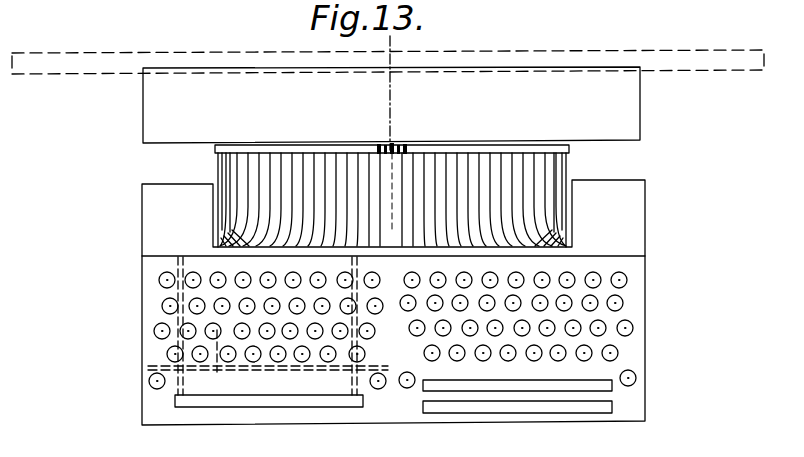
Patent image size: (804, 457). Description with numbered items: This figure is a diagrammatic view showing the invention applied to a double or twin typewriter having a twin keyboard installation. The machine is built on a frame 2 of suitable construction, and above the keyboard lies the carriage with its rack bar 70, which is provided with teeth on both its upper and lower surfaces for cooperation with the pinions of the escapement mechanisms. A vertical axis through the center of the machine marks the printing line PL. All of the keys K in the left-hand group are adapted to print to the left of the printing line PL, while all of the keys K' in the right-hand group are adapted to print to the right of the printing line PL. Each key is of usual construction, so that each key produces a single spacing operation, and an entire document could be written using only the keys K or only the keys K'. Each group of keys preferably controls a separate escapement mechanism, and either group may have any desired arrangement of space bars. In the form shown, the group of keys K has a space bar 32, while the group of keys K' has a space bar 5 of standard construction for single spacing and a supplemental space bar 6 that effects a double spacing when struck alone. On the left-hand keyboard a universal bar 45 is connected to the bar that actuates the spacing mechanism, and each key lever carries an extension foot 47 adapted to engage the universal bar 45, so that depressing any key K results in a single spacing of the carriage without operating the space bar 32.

The rack bar 70 is at (92, 68).
The printing line PL is at (380, 93).
The frame 2 is at (143, 222).
The keys of the left hand group K is at (246, 330).
The keys of the right hand group K' is at (538, 330).
The universal bar 45 is at (155, 366).
The extension foot 47 is at (217, 370).
The space bar 32 is at (295, 402).
The space bar 5 is at (498, 385).
The supplemental space bar 6 is at (558, 408).